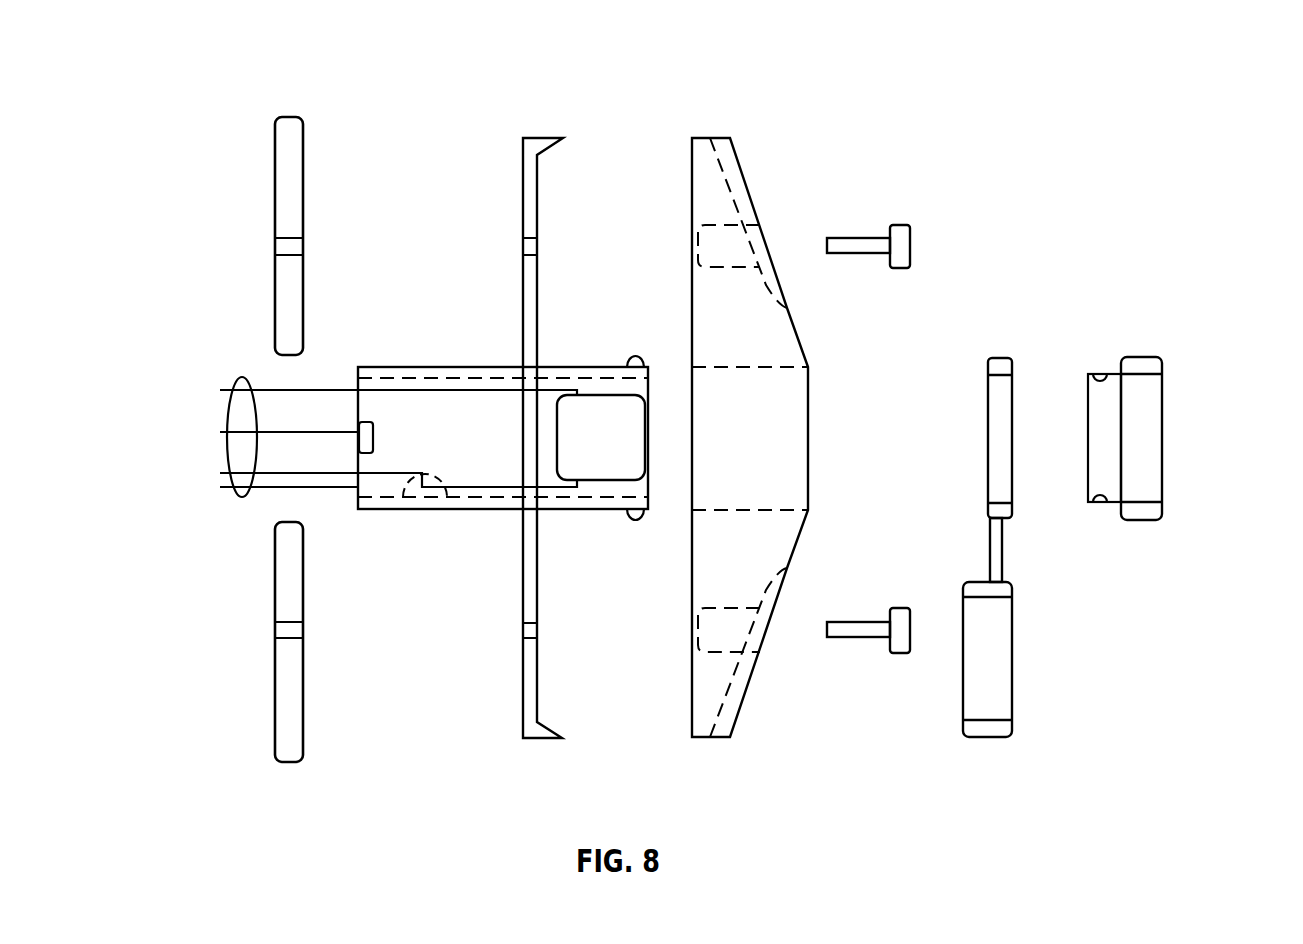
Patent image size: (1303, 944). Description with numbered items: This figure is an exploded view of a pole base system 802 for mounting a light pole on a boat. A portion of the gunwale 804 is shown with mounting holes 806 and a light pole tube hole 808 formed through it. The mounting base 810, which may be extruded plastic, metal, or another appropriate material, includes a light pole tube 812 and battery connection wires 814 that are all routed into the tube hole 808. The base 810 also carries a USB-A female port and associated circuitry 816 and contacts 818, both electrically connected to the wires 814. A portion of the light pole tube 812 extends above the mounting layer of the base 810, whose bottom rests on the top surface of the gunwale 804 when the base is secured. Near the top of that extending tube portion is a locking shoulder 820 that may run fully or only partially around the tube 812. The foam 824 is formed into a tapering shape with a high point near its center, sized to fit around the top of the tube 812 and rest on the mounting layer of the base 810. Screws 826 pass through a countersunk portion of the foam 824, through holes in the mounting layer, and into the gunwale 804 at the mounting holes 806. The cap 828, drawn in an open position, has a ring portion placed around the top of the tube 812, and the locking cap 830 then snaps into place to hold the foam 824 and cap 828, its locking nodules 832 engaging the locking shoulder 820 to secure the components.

The pole base system 802 is at (1156, 146).
The gunwale 804 is at (287, 117).
The mounting holes 806 is at (275, 246).
The light pole tube hole 808 is at (326, 494).
The mounting base 810 is at (537, 740).
The light pole tube 812 is at (442, 367).
The battery connection wires 814 is at (226, 450).
The USB-A female port and associated circuitry 816 is at (583, 454).
The contacts 818 is at (428, 502).
The locking shoulder 820 is at (635, 517).
The foam 824 is at (748, 188).
The screws 826 is at (897, 243).
The cap 828 is at (991, 748).
The locking cap 830 is at (1145, 344).
The locking nodules 832 is at (1098, 372).